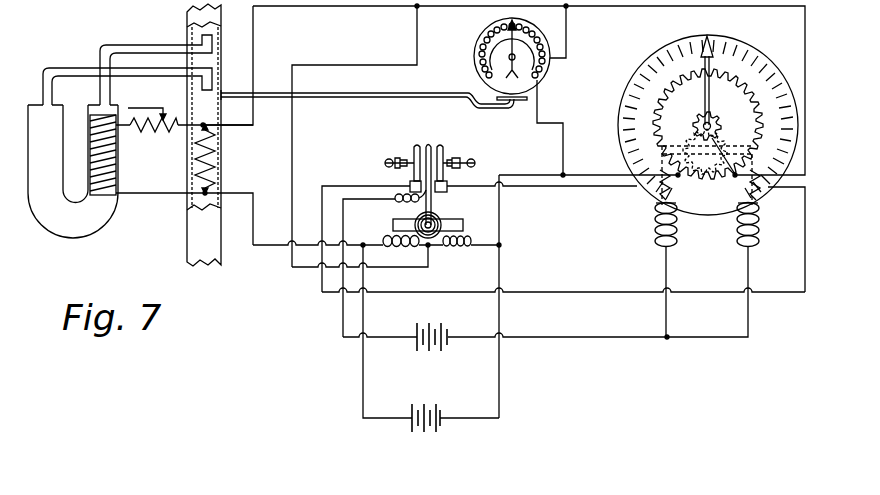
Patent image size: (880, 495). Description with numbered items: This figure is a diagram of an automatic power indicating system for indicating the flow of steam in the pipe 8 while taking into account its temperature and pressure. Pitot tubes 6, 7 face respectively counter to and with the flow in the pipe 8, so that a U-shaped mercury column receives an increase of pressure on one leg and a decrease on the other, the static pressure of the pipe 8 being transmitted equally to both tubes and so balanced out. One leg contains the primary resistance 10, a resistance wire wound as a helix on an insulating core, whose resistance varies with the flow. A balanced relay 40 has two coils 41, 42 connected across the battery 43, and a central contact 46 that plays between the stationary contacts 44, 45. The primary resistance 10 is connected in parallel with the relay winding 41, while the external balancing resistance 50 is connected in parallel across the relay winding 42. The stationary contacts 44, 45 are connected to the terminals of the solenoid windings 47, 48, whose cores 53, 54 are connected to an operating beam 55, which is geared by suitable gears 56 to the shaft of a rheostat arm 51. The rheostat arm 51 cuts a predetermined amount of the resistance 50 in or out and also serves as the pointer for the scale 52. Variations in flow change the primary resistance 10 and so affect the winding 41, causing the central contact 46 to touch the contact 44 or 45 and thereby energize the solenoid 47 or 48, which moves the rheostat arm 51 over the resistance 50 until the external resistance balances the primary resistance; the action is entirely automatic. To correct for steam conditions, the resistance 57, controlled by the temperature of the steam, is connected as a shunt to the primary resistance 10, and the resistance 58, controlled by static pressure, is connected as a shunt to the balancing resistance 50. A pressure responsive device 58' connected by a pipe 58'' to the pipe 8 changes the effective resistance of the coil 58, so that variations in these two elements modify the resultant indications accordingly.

The Pitot tube 6 is at (212, 84).
The Pitot tube 7 is at (213, 43).
The pipe 8 is at (190, 14).
The primary resistance wire 10 is at (118, 157).
The balanced relay 40 is at (464, 222).
The relay coil 41 is at (405, 258).
The relay coil 42 is at (448, 250).
The battery 43 is at (441, 412).
The stationary contact 44 is at (414, 150).
The stationary contact 45 is at (443, 150).
The central contact 46 is at (429, 146).
The solenoid winding 47 is at (759, 238).
The solenoid winding 48 is at (655, 232).
The external balancing resistance 50 is at (750, 78).
The rheostat arm 51 is at (712, 60).
The scale 52 is at (657, 30).
The solenoid core 53 is at (760, 208).
The solenoid core 54 is at (655, 208).
The operating beam 55 is at (728, 168).
The gears 56 is at (714, 133).
The temperature resistance 57 is at (222, 160).
The pressure resistance coil 58 is at (536, 59).
The pressure responsive device 58' is at (489, 50).
The pipe 58'' is at (367, 75).